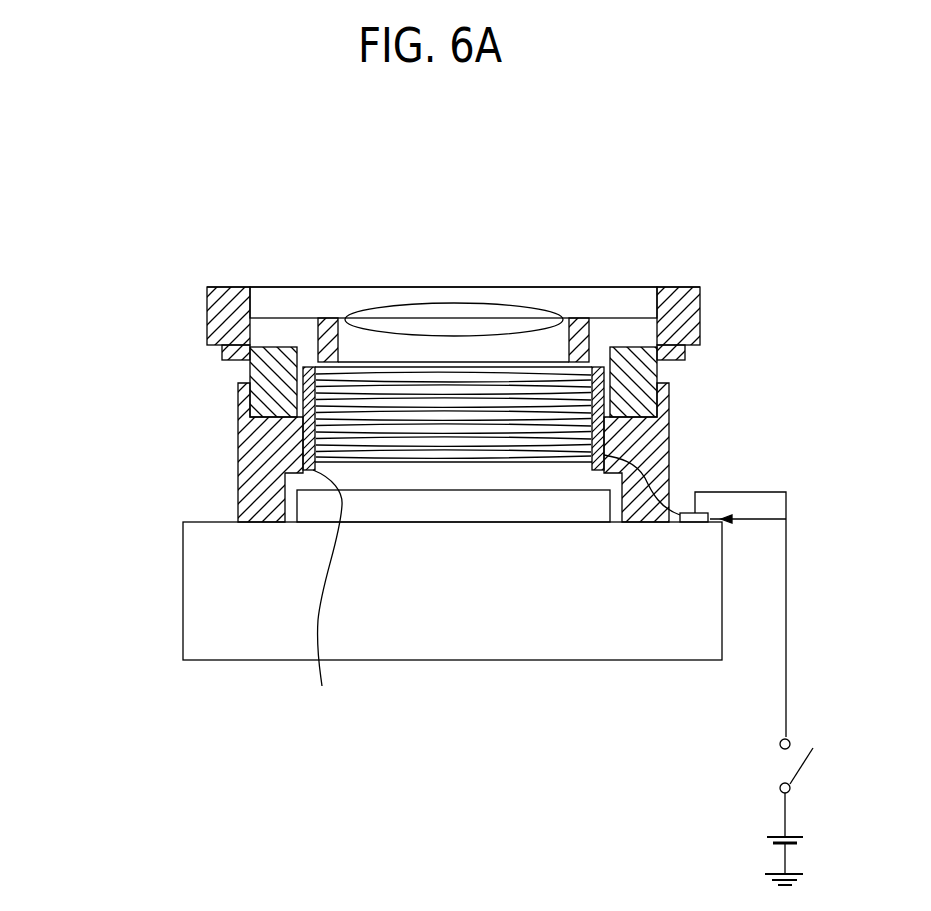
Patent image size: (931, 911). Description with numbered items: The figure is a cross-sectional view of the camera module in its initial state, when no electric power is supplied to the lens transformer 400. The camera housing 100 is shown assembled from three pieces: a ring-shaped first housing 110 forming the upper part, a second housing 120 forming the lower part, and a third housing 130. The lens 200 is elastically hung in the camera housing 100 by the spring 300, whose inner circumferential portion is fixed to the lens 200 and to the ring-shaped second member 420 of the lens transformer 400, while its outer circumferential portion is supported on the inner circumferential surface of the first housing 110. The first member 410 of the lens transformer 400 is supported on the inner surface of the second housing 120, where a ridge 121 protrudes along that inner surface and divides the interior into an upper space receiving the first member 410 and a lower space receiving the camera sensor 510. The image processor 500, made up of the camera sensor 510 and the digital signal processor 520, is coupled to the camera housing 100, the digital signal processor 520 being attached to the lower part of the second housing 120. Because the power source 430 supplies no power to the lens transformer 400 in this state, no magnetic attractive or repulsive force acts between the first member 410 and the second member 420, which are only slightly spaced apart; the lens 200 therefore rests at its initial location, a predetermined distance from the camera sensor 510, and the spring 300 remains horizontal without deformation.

The camera housing 100 is at (82, 322).
The first housing 110 is at (221, 318).
The second housing 120 is at (270, 445).
The ridge 121 is at (330, 595).
The third housing 130 is at (272, 378).
The lens 200 is at (473, 302).
The spring 300 is at (620, 316).
The lens transformer 400 is at (805, 332).
The first member 410 is at (615, 383).
The second member 420 is at (685, 340).
The power source 430 is at (808, 841).
The image processor 500 is at (80, 493).
The camera sensor 510 is at (313, 510).
The digital signal processor 520 is at (212, 598).